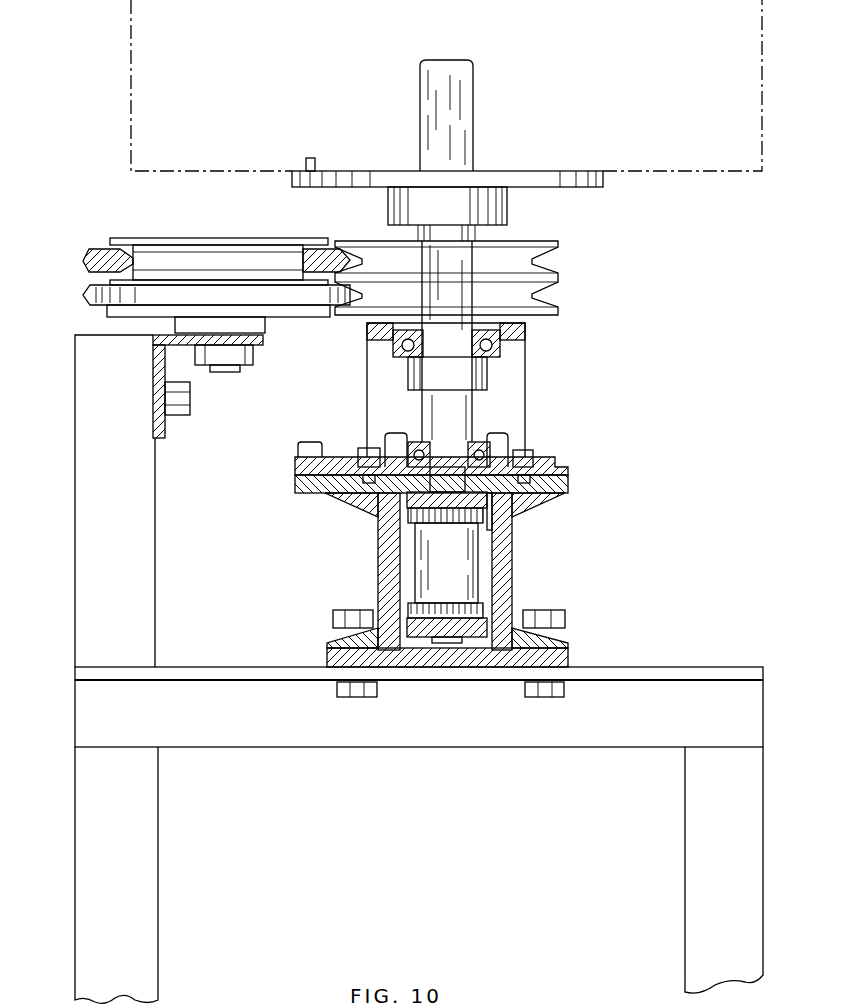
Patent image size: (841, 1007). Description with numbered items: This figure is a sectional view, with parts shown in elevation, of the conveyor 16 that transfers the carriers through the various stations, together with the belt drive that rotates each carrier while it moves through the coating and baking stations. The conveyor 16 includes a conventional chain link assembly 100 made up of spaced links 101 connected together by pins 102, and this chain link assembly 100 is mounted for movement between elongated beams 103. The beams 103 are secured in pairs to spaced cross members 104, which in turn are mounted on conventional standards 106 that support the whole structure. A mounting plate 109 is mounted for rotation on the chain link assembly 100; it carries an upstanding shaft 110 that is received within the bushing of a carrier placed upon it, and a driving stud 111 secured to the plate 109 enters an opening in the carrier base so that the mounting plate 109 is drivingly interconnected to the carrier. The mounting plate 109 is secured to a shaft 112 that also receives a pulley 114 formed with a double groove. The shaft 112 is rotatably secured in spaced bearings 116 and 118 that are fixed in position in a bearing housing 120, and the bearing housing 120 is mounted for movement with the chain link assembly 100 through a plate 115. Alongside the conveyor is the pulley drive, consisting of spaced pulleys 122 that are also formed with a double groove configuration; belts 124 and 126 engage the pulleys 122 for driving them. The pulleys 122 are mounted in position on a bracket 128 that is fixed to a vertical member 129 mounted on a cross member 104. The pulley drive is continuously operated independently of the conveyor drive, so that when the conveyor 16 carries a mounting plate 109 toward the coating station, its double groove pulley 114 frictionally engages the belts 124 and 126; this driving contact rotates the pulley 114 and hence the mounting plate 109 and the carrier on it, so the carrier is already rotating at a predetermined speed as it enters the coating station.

The conveyor 16 is at (582, 433).
The chain link assembly 100 is at (443, 601).
The links 101 is at (420, 500).
The pins 102 is at (425, 572).
The elongated beams 103 is at (378, 560).
The cross members 104 is at (668, 697).
The standards 106 is at (132, 925).
The mounting plate 109 is at (563, 171).
The upstanding shaft 110 is at (458, 118).
The driving stud 111 is at (312, 157).
The shaft 112 is at (445, 340).
The pulley 114 is at (545, 240).
The plate 115 is at (555, 472).
The bearing 116 is at (492, 345).
The bearing 118 is at (497, 452).
The bearing housing 120 is at (475, 390).
The pulley 122 is at (157, 238).
The belt 124 is at (80, 245).
The belt 126 is at (85, 292).
The bracket 128 is at (167, 370).
The vertical member 129 is at (118, 542).